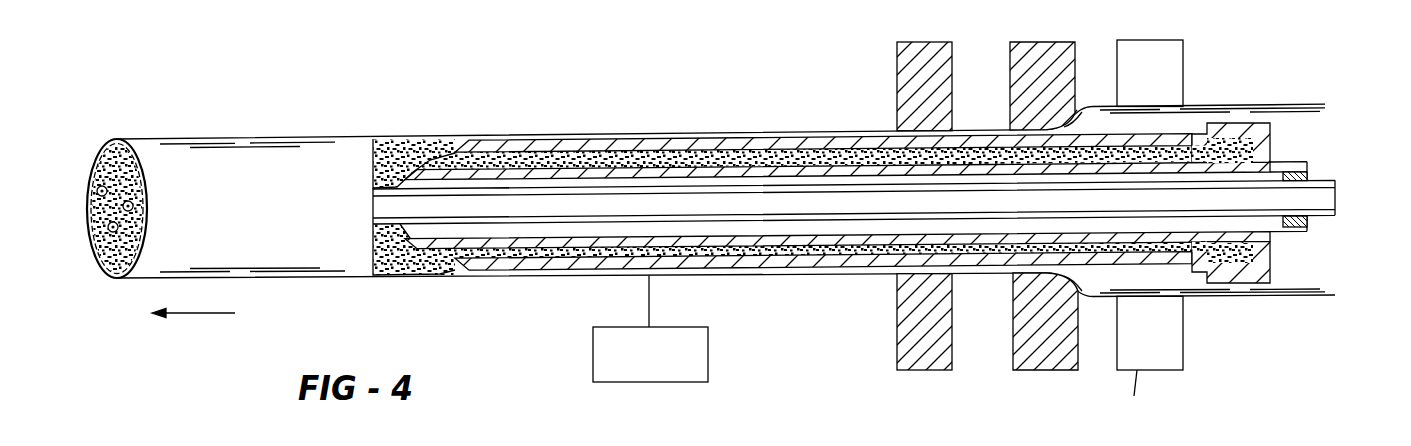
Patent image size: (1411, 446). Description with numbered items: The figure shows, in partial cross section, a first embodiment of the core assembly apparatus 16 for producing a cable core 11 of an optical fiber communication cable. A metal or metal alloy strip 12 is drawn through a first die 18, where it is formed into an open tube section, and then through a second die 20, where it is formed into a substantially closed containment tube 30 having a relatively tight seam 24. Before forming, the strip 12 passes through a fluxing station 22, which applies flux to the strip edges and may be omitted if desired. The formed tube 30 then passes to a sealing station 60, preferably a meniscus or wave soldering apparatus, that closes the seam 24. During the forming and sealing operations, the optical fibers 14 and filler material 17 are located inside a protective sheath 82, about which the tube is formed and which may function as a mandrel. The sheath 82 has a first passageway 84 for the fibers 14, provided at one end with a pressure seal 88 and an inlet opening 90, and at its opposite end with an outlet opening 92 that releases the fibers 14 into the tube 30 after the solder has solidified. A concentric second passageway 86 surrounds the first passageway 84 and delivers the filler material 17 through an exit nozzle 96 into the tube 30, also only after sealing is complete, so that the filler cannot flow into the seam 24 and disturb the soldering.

The cable core 11 is at (210, 124).
The metal or metal alloy strip 12 is at (1252, 117).
The optical fibers 14 is at (108, 227).
The core assembly apparatus 16 is at (587, 106).
The filler material 17 is at (108, 250).
The first die 18 is at (1010, 58).
The second die 20 is at (897, 50).
The fluxing station 22 is at (1186, 44).
The seam 24 is at (117, 276).
The containment tube 30 is at (113, 139).
The sealing station 60 is at (705, 362).
The protective sheath 82 is at (774, 138).
The first passageway 84 is at (1287, 163).
The second passageway 86 is at (1252, 277).
The pressure seal 88 is at (1310, 176).
The inlet opening 90 is at (1315, 223).
The outlet opening 92 is at (373, 226).
The exit nozzle 96 is at (437, 150).